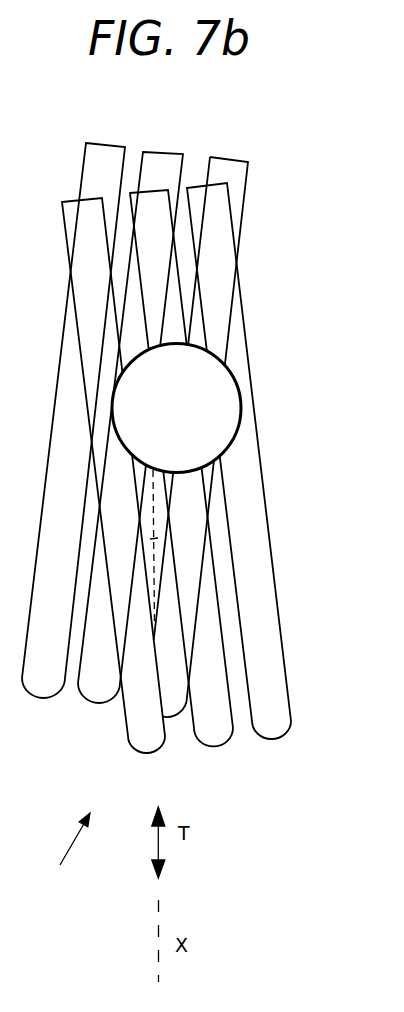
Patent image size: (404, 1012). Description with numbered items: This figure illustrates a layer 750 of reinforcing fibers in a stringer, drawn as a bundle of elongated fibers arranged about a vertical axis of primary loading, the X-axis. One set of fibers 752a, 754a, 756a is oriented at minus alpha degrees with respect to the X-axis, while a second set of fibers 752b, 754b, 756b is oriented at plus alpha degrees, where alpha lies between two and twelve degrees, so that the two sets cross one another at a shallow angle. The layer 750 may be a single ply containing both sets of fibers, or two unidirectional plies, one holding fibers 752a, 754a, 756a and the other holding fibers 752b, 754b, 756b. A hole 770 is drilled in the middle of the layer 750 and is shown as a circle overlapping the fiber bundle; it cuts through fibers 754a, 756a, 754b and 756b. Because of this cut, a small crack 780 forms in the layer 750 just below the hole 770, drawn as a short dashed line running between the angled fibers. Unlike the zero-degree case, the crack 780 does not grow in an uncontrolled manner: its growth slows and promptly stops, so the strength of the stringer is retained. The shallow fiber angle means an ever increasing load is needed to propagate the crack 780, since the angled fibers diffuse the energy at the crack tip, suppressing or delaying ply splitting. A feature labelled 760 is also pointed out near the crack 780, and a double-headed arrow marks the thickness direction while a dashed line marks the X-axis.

The layer 750 is at (60, 865).
The fiber 752a is at (132, 752).
The fiber 752b is at (110, 145).
The fiber 754a is at (218, 748).
The fiber 754b is at (163, 152).
The fiber 756a is at (275, 740).
The fiber 756b is at (232, 157).
The central axis 760 is at (151, 539).
The hole 770 is at (158, 419).
The crack 780 is at (151, 512).